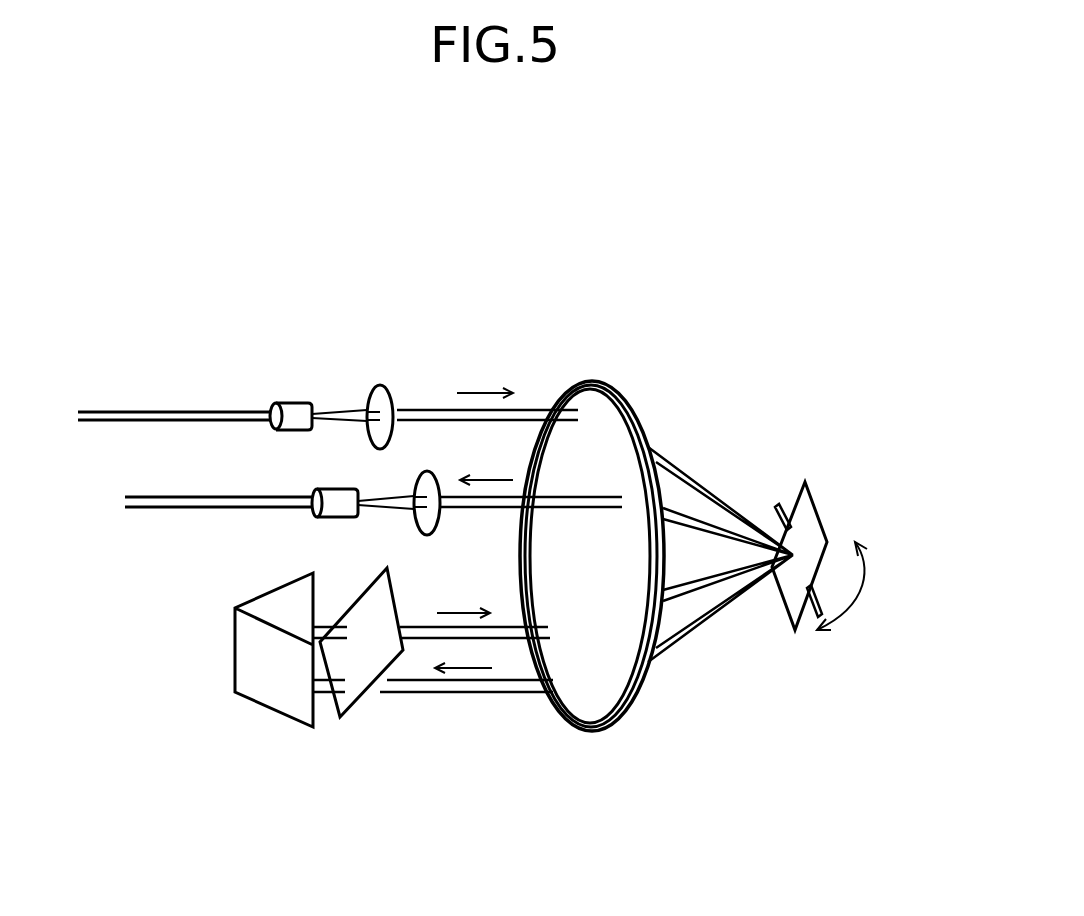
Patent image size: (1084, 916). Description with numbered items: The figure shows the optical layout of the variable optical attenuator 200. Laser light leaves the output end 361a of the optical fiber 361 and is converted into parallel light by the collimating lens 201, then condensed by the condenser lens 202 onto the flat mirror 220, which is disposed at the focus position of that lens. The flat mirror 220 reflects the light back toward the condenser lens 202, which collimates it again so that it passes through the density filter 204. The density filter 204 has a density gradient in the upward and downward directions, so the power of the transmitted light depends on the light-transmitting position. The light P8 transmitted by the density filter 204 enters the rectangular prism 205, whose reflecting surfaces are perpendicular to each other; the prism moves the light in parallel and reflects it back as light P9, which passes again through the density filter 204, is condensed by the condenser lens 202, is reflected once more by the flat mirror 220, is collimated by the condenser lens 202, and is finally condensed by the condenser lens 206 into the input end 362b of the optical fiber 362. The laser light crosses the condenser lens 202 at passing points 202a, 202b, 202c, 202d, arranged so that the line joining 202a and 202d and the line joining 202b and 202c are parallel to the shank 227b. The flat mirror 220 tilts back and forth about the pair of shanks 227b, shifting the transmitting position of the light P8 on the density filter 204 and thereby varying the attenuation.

The variable optical attenuator 200 is at (572, 270).
The collimating lens 201 is at (383, 385).
The condenser lens 202 is at (598, 380).
The passing point 202a is at (578, 404).
The passing point 202b is at (572, 730).
The passing point 202c is at (548, 627).
The passing point 202d is at (621, 500).
The density filter 204 is at (383, 647).
The rectangular prism 205 is at (268, 698).
The condenser lens 206 is at (428, 472).
The flat mirror 220 is at (817, 500).
The shank 227b is at (780, 503).
The optical fiber 361 is at (150, 412).
The output end 361a is at (287, 405).
The optical fiber 362 is at (167, 507).
The input end 362b is at (327, 490).
The light P8 is at (323, 697).
The light P9 is at (328, 627).